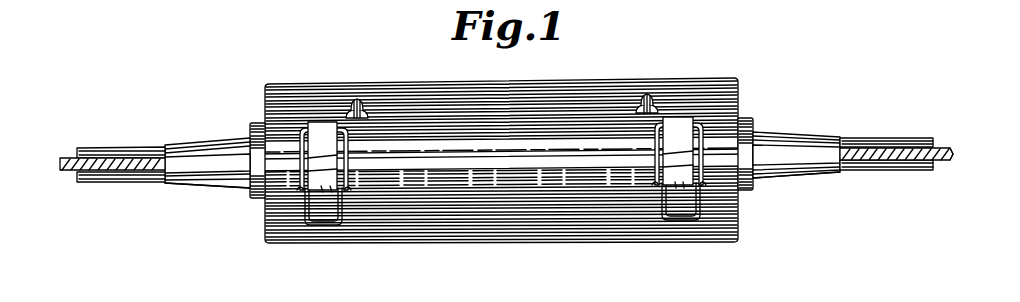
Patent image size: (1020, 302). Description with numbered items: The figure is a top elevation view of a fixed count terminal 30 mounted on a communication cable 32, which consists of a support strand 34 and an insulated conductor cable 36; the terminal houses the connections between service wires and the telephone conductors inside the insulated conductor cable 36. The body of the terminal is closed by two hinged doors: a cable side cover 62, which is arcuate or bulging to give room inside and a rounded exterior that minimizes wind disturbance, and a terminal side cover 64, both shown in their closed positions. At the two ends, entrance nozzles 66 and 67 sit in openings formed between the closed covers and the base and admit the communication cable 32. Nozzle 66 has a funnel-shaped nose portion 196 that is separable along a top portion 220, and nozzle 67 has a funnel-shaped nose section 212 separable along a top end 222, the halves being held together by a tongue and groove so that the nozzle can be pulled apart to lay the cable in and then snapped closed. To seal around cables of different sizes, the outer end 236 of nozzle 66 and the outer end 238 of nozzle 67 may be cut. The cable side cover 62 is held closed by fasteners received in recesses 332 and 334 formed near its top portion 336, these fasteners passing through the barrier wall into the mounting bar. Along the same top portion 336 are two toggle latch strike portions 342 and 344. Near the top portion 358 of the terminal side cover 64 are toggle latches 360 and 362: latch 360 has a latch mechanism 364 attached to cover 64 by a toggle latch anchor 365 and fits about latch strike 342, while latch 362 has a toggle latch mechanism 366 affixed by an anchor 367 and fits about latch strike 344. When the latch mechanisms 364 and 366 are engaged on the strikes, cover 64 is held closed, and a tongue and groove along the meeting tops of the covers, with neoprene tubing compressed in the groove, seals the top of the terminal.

The fixed count terminal 30 is at (769, 53).
The communication cable 32 is at (886, 140).
The support strand 34 is at (951, 165).
The insulated conductor cable 36 is at (917, 140).
The cable side cover 62 is at (582, 79).
The terminal side cover 64 is at (539, 242).
The entrance nozzle 66 is at (204, 142).
The entrance nozzle 67 is at (808, 132).
The funnel-shaped nose portion 196 is at (229, 187).
The funnel-shaped nose section 212 is at (788, 179).
The top portion 220 is at (188, 170).
The top end 222 is at (816, 160).
The outer end 236 is at (162, 151).
The outer end 238 is at (851, 143).
The recess 332 is at (359, 106).
The recess 334 is at (647, 96).
The top portion 336 is at (451, 140).
The toggle latch strike portion 342 is at (327, 121).
The toggle latch strike portion 344 is at (681, 122).
The top portion 358 is at (470, 180).
The toggle latch 360 is at (321, 182).
The toggle latch 362 is at (674, 184).
The latch mechanism 364 is at (305, 212).
The toggle latch anchor 365 is at (331, 188).
The toggle latch mechanism 366 is at (704, 208).
The anchor 367 is at (683, 184).